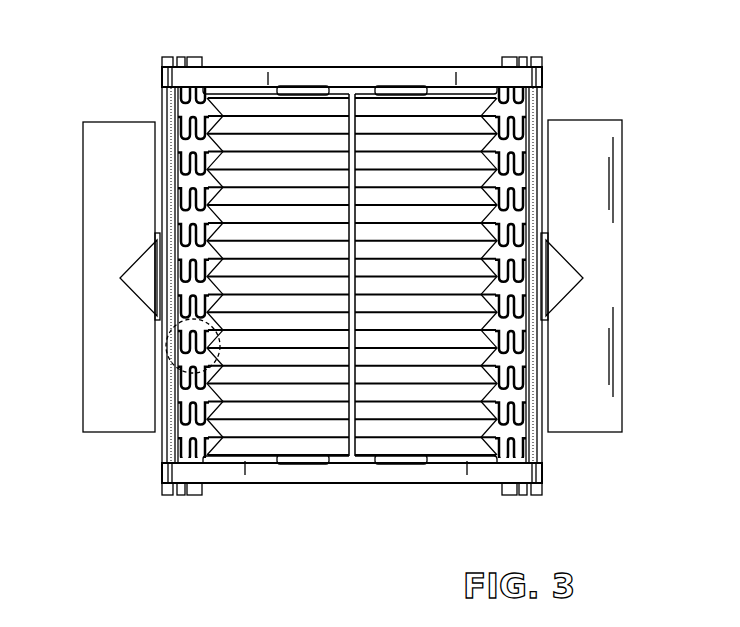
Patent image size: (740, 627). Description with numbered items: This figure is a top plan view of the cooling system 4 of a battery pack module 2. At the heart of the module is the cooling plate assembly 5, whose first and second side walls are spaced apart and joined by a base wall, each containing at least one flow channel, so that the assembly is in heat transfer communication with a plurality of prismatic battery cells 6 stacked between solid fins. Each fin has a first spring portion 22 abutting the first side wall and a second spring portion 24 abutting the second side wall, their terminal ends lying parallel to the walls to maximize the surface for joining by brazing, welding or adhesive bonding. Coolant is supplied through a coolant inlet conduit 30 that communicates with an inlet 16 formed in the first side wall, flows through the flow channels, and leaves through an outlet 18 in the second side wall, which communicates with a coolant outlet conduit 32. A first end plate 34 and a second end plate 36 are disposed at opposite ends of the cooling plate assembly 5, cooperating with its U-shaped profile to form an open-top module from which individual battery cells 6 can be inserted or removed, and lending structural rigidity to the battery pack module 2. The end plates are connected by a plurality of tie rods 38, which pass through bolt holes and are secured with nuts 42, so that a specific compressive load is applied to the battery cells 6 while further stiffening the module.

The battery pack module 2 is at (364, 279).
The cooling system 4 is at (342, 272).
The cooling plate assembly 5 is at (545, 115).
The battery cells 6 is at (233, 237).
The inlet 16 is at (122, 276).
The outlet 18 is at (583, 275).
The first spring portion 22 is at (175, 430).
The second spring portion 24 is at (528, 442).
The coolant inlet conduit 30 is at (83, 203).
The coolant outlet conduit 32 is at (623, 355).
The first end plate 34 is at (451, 485).
The second end plate 36 is at (428, 67).
The tie rods 38 is at (172, 406).
The nuts 42 is at (346, 67).